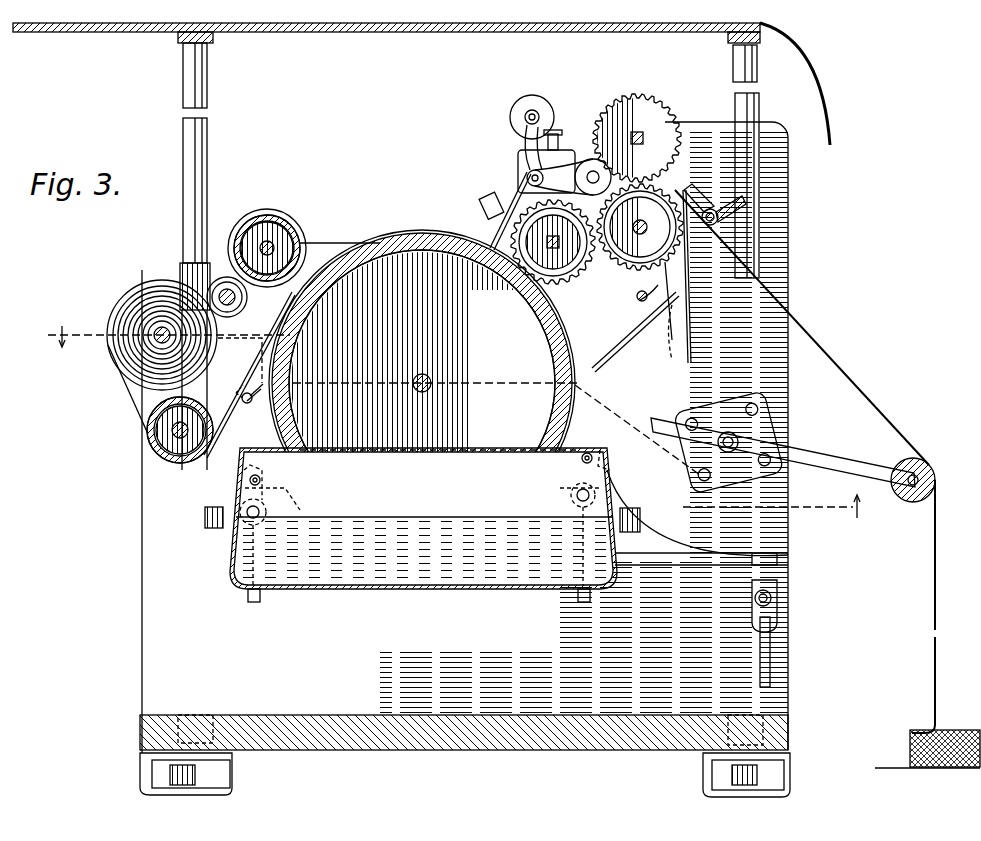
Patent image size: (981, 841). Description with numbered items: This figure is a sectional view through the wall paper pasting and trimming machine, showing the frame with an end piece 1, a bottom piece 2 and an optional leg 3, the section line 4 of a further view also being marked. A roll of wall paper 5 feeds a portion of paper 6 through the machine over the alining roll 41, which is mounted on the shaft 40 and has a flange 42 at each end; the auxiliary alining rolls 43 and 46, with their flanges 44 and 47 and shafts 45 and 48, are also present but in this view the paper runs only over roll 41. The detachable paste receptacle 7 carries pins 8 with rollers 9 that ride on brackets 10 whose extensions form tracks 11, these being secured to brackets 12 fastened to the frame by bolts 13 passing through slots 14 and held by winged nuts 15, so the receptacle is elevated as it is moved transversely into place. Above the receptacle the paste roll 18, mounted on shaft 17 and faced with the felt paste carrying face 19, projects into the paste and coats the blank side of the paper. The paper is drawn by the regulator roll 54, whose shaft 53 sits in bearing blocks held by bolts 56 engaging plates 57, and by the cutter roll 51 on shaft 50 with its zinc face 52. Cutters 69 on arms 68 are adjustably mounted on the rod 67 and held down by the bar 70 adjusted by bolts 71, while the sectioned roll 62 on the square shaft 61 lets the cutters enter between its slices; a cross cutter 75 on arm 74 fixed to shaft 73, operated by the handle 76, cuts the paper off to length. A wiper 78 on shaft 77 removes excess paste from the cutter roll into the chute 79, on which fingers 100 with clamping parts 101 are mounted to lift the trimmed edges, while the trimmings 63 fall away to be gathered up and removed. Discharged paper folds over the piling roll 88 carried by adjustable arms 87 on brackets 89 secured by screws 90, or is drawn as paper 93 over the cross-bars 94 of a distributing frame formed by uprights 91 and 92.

The end piece 1 is at (788, 240).
The bottom piece 2 is at (480, 750).
The leg 3 is at (222, 778).
The section line 4 is at (456, 424).
The roll of wall paper 5 is at (135, 302).
The paper 6 is at (248, 405).
The paste receptacle 7 is at (305, 585).
The pin 8 is at (248, 480).
The roller 9 is at (427, 465).
The bracket 10 is at (245, 488).
The track 11 is at (665, 520).
The bracket 12 is at (260, 590).
The bolt 13 is at (218, 528).
The slot 14 is at (246, 598).
The winged nut 15 is at (778, 612).
The shaft 17 is at (428, 377).
The paste roll 18 is at (445, 236).
The paste carrying face 19 is at (425, 230).
The shaft 40 is at (172, 432).
The alining roll 41 is at (165, 455).
The flange 42 is at (150, 419).
The roll 43 is at (240, 297).
The flange 44 is at (200, 265).
The shaft 45 is at (240, 348).
The roll 46 is at (280, 215).
The flange 47 is at (297, 238).
The shaft 48 is at (263, 243).
The shaft 50 is at (640, 227).
The cutter roll 51 is at (668, 275).
The face 52 is at (670, 300).
The shaft 53 is at (563, 242).
The regulator roll 54 is at (565, 270).
The bolt 56 is at (488, 195).
The plate 57 is at (486, 215).
The shaft 61 is at (645, 135).
The roll 62 is at (910, 748).
The ratchet wheel 63 is at (645, 88).
The rod 67 is at (527, 180).
The arm 68 is at (572, 178).
The cutter 69 is at (603, 172).
The bar 70 is at (518, 165).
The bolt 71 is at (552, 145).
The shaft 73 is at (718, 222).
The arm 74 is at (690, 180).
The cutter 75 is at (720, 200).
The handle 76 is at (716, 212).
The shaft 77 is at (640, 302).
The wiper 78 is at (621, 299).
The chute 79 is at (635, 332).
The arm 87 is at (850, 465).
The roll 88 is at (913, 500).
The bracket 89 is at (762, 418).
The screw 90 is at (728, 453).
The upright 91 is at (735, 78).
The upright 92 is at (205, 120).
The paper 93 is at (382, 32).
The cross-bar 94 is at (208, 40).
The finger 100 is at (745, 262).
The extended part 101 is at (655, 345).